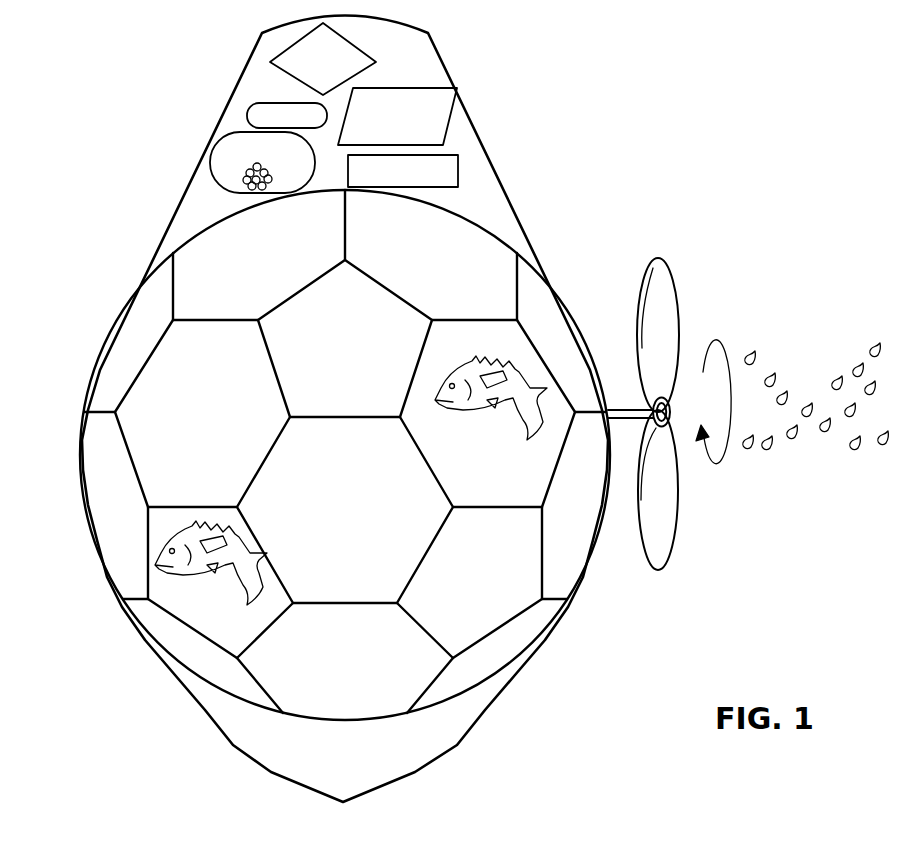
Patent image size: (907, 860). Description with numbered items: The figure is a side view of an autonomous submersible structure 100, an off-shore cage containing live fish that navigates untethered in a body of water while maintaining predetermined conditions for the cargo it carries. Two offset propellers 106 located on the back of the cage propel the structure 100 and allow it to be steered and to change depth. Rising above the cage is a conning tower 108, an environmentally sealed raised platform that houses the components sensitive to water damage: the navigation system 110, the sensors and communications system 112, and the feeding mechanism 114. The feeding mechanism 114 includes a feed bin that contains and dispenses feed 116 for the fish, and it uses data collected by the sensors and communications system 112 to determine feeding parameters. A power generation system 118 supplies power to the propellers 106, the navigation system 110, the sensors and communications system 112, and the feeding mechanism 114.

The autonomous submersible structure 100 is at (137, 131).
The propellers 106 is at (678, 297).
The conning tower 108 is at (497, 155).
The navigation system 110 is at (458, 178).
The sensors and communications system 112 is at (282, 56).
The feeding mechanism 114 is at (233, 132).
The feed 116 is at (247, 181).
The power generation system 118 is at (428, 87).